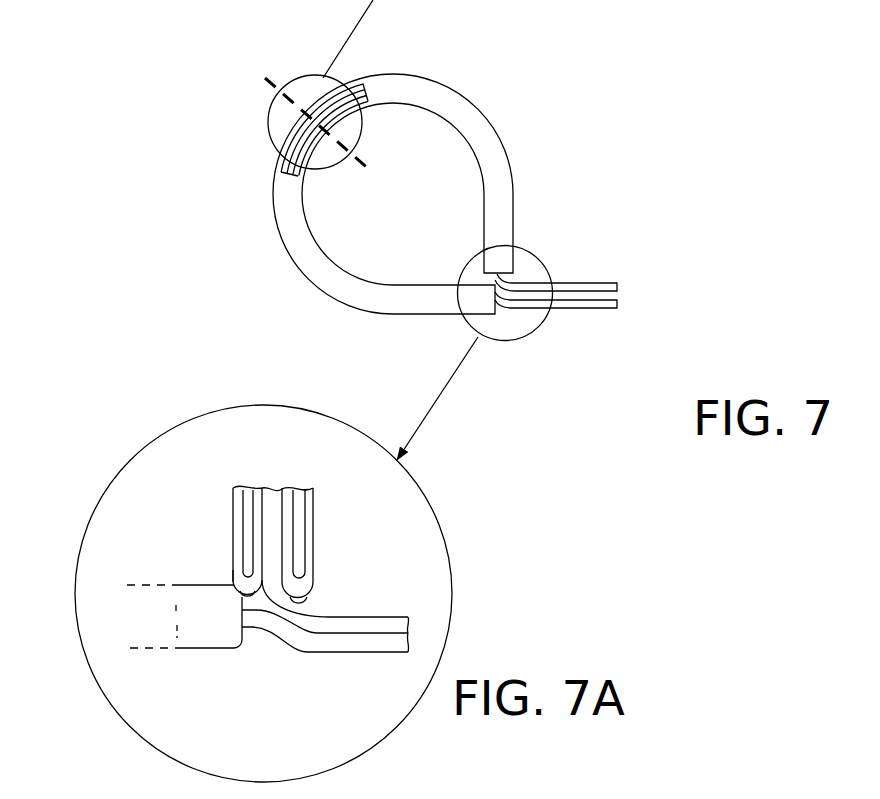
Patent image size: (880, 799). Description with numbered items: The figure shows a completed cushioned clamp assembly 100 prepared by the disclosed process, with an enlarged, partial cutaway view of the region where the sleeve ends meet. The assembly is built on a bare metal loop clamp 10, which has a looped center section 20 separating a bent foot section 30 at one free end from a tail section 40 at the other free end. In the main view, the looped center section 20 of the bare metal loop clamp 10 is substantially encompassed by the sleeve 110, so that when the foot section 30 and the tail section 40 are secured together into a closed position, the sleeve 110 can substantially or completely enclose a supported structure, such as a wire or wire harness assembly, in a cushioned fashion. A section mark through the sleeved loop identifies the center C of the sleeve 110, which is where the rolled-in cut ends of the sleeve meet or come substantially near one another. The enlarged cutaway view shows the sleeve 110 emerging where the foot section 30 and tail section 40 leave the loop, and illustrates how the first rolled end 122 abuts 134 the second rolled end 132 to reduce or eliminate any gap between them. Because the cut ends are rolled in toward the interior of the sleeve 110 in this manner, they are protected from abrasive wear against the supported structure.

In FIG. 7, the cushioned clamp assembly 100 is at (205, 117).
In FIG. 7, the sleeve 110 is at (481, 138).
In FIG. 7A, the sleeve 110 is at (320, 521).
In FIG. 7, the looped center section 20 is at (282, 164).
In FIG. 7, the center C is at (327, 111).
In FIG. 7, the bare metal loop clamp 10 is at (636, 287).
In FIG. 7, the bent foot section 30 is at (593, 283).
In FIG. 7A, the bent foot section 30 is at (359, 623).
In FIG. 7, the tail section 40 is at (597, 307).
In FIG. 7A, the tail section 40 is at (350, 646).
In FIG. 7A, the second rolled end 132 is at (300, 598).
In FIG. 7A, the abutment 134 is at (220, 573).
In FIG. 7A, the first rolled end 122 is at (217, 652).